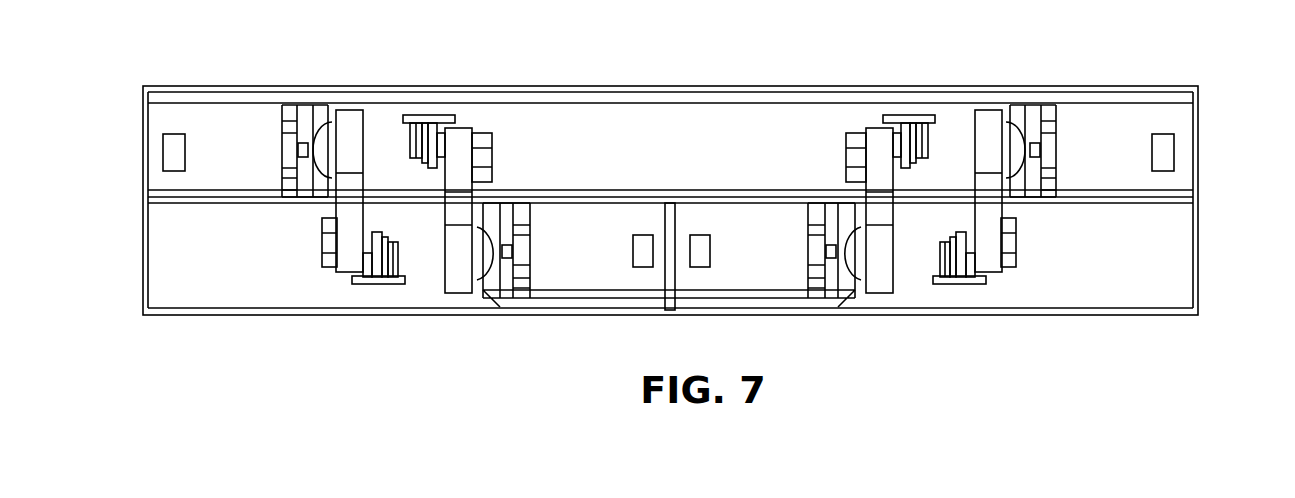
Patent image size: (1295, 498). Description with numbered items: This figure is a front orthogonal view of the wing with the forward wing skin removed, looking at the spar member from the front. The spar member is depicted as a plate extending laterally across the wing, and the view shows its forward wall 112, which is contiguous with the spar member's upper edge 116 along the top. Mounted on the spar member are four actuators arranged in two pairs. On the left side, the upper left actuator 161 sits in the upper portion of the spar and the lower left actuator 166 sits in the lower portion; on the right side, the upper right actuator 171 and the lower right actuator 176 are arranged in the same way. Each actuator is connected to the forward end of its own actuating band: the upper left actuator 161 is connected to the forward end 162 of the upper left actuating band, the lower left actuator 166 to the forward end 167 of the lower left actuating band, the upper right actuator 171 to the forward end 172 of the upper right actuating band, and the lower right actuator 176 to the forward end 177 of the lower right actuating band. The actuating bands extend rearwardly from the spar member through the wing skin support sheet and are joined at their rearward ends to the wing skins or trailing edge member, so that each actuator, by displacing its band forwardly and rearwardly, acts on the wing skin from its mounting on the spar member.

The forward wall 112 is at (615, 117).
The upper edge 116 is at (742, 86).
The upper left actuator 161 is at (608, 230).
The forward end of the upper left actuating band 162 is at (422, 117).
The lower left actuator 166 is at (218, 195).
The forward end of the lower left actuating band 167 is at (395, 284).
The upper right actuator 171 is at (753, 230).
The forward end of the upper right actuating band 172 is at (918, 115).
The lower right actuator 176 is at (1107, 197).
The forward end of the lower right actuating band 177 is at (942, 284).